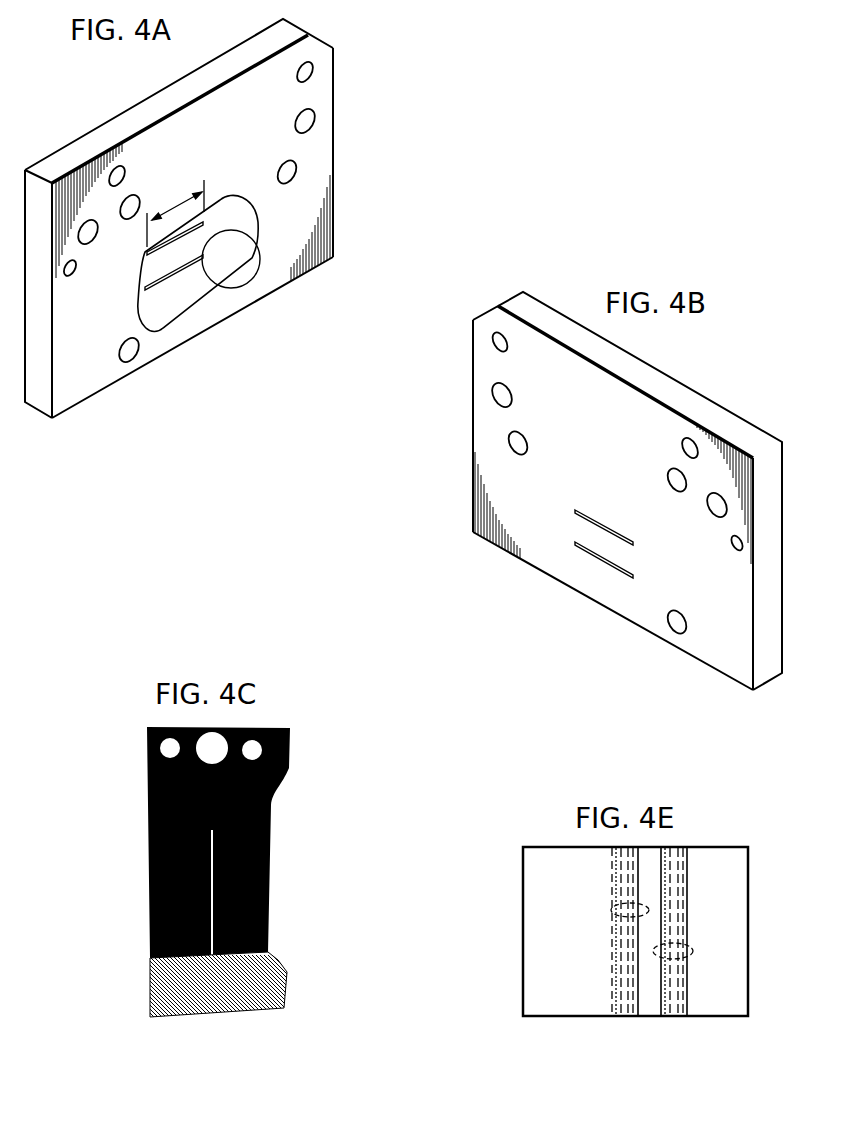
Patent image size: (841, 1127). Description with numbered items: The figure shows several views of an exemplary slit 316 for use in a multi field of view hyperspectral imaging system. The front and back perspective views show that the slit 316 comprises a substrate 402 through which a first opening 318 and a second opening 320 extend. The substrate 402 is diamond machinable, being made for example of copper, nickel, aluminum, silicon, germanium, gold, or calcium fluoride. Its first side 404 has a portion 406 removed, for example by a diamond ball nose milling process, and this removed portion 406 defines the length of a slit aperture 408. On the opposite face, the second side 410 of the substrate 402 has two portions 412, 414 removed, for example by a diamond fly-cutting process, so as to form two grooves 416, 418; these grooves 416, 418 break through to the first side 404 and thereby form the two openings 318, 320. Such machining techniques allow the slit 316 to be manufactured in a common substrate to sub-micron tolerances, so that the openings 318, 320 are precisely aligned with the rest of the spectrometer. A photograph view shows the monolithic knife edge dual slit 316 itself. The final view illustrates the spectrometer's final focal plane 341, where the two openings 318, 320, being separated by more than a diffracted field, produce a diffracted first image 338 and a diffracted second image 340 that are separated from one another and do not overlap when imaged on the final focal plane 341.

In FIG. 4A, the slit 316 is at (391, 106).
In FIG. 4B, the slit 316 is at (442, 375).
In FIG. 4C, the slit 316 is at (108, 782).
In FIG. 4A, the first opening 318 is at (204, 221).
In FIG. 4B, the first opening 318 is at (636, 542).
In FIG. 4A, the second opening 320 is at (258, 232).
In FIG. 4B, the second opening 320 is at (636, 574).
In FIG. 4A, the substrate 402 is at (264, 304).
In FIG. 4B, the substrate 402 is at (558, 586).
In FIG. 4A, the first side 404 is at (88, 394).
In FIG. 4A, the portion 406 is at (185, 303).
In FIG. 4A, the slit aperture 408 is at (176, 206).
In FIG. 4B, the second side 410 is at (718, 668).
In FIG. 4B, the portion 412 is at (568, 511).
In FIG. 4B, the portion 414 is at (568, 545).
In FIG. 4B, the groove 416 is at (602, 520).
In FIG. 4B, the groove 418 is at (603, 562).
In FIG. 4E, the diffracted first image 338 is at (612, 914).
In FIG. 4E, the diffracted second image 340 is at (694, 952).
In FIG. 4E, the final focal plane 341 is at (522, 932).